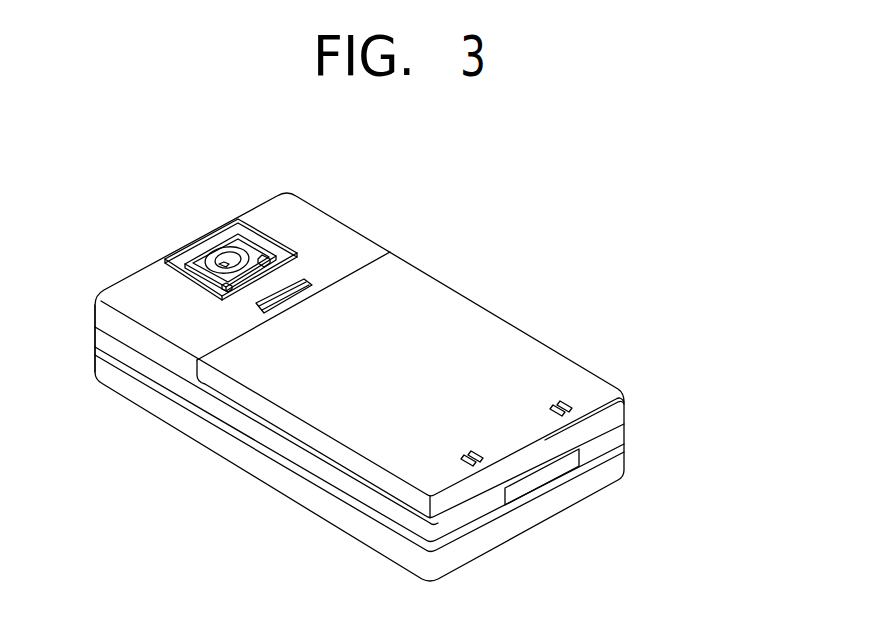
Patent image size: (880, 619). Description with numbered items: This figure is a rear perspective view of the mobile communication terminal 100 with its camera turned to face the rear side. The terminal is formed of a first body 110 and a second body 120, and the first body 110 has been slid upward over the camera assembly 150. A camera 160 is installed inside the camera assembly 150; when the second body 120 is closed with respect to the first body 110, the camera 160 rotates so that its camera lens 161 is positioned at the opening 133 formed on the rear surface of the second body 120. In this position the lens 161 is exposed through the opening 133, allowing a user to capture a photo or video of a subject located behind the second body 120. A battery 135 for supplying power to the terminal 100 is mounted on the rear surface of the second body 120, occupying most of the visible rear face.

The mobile communication terminal 100 is at (608, 268).
The first body 110 is at (633, 462).
The second body 120 is at (631, 412).
The battery 135 is at (458, 322).
The camera assembly 150 is at (208, 248).
The camera 160 is at (166, 264).
The camera lens 161 is at (188, 248).
The opening 133 is at (263, 262).